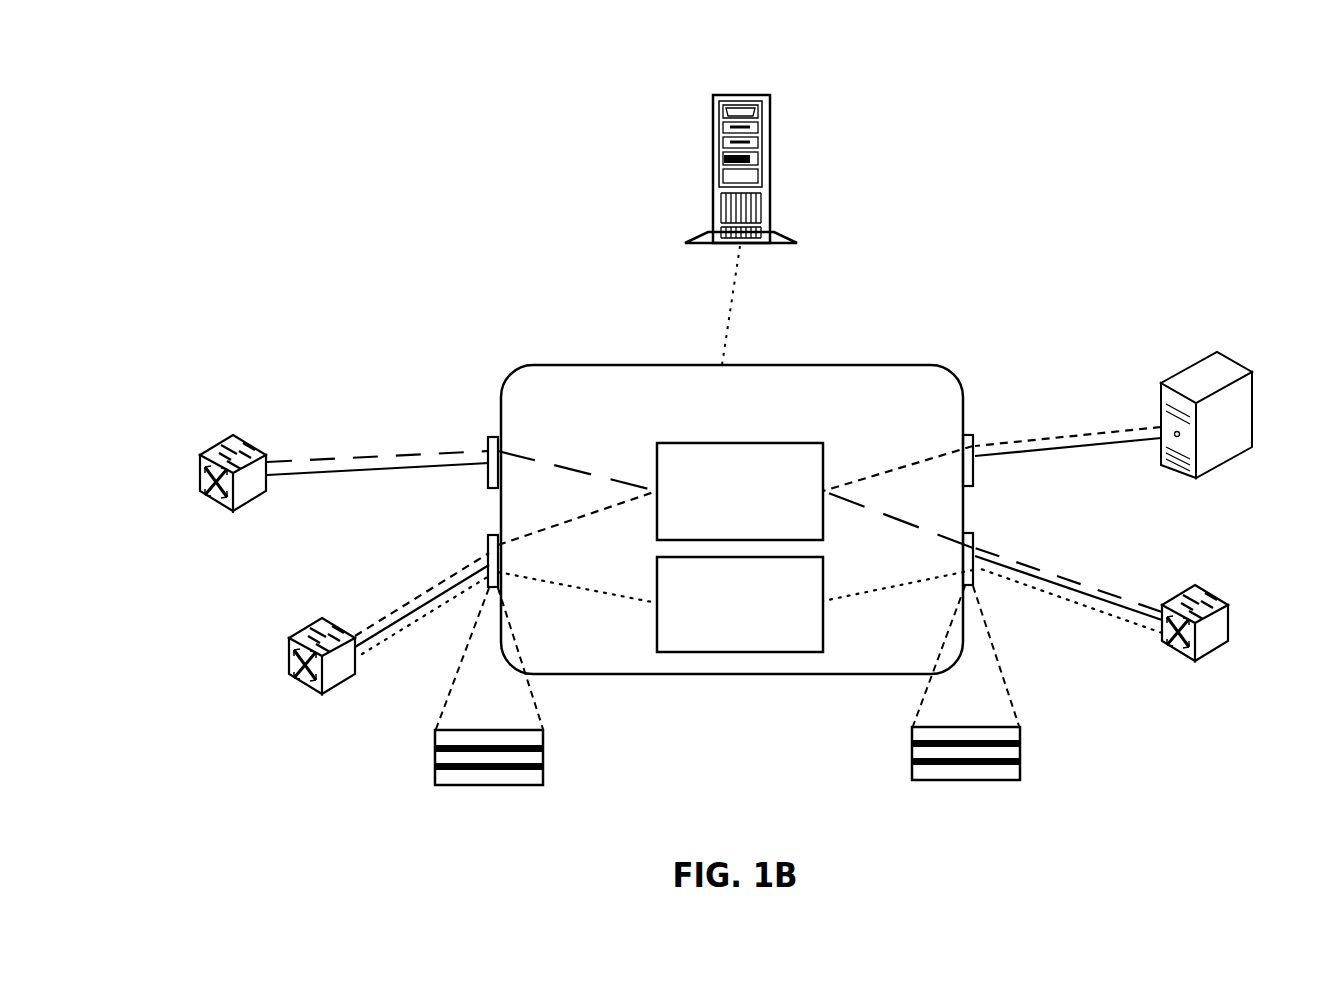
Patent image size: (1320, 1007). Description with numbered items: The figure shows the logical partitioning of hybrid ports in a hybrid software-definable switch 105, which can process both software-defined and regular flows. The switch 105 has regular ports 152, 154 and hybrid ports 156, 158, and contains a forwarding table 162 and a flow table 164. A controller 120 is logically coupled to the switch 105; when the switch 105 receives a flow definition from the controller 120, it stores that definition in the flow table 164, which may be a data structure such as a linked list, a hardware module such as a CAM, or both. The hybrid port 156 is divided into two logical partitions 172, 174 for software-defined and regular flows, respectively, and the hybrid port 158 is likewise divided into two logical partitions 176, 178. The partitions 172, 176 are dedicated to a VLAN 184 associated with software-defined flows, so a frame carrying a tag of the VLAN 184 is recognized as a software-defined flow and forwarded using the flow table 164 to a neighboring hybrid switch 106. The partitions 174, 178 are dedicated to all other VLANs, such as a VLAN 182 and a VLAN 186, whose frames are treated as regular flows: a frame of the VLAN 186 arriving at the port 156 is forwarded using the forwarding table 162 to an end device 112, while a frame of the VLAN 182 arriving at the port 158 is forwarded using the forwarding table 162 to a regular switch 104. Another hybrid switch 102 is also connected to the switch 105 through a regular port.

The controller 120 is at (771, 135).
The hybrid software-definable switch 105 is at (732, 519).
The forwarding table 162 is at (740, 491).
The flow table 164 is at (740, 604).
The regular port 152 is at (492, 437).
The regular port 154 is at (970, 434).
The hybrid port 156 is at (492, 535).
The hybrid port 158 is at (970, 533).
The hybrid software-definable switch 102 is at (290, 665).
The regular switch 104 is at (200, 480).
The hybrid software-definable switch 106 is at (1228, 625).
The end device 112 is at (1252, 430).
The logical partition 172 is at (435, 747).
The logical partition 174 is at (543, 766).
The logical partition 176 is at (912, 742).
The logical partition 178 is at (1020, 760).
The VLAN 182 is at (1053, 575).
The VLAN 184 is at (1023, 582).
The VLAN 186 is at (1068, 438).